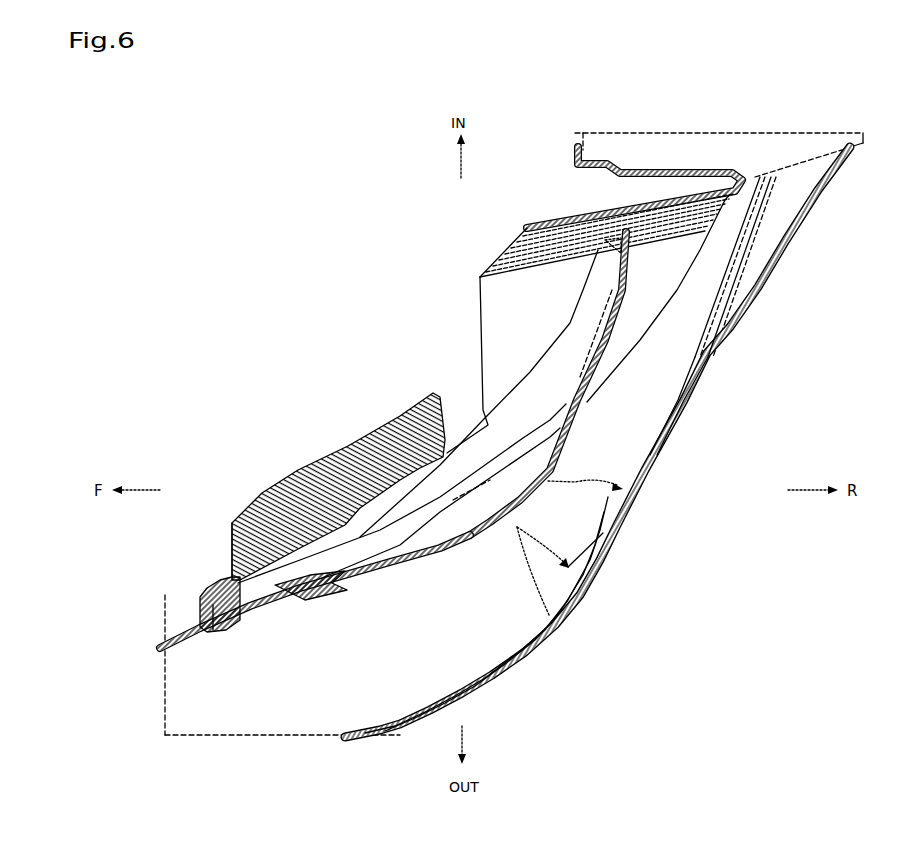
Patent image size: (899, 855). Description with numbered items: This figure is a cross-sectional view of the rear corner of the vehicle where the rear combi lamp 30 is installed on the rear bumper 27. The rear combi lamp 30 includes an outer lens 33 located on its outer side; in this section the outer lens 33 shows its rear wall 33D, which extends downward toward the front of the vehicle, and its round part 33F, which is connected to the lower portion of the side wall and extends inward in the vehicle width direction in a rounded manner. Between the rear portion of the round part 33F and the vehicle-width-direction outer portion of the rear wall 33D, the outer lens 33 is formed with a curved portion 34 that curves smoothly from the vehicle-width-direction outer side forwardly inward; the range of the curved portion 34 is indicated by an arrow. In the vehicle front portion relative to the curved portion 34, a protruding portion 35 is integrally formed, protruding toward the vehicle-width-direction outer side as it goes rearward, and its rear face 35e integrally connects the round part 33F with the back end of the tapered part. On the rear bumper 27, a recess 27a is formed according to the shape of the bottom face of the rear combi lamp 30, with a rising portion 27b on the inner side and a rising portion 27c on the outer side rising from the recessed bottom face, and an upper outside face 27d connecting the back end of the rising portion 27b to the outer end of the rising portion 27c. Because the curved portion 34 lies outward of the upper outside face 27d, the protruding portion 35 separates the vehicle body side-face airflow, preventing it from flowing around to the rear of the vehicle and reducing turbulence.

The rear bumper 27 is at (594, 590).
The recess 27a is at (655, 302).
The rising portion on the vehicle-width-direction inner side 27b is at (623, 224).
The rising portion on the vehicle-width-direction outer side 27c is at (195, 623).
The upper outside face 27d is at (563, 643).
The rear combi lamp 30 is at (598, 403).
The outer lens 33 is at (386, 586).
The rear wall 33D is at (612, 322).
The round part 33F is at (337, 589).
The curved portion 34 is at (572, 463).
The protruding portion 35 is at (452, 566).
The rear face 35e is at (477, 545).